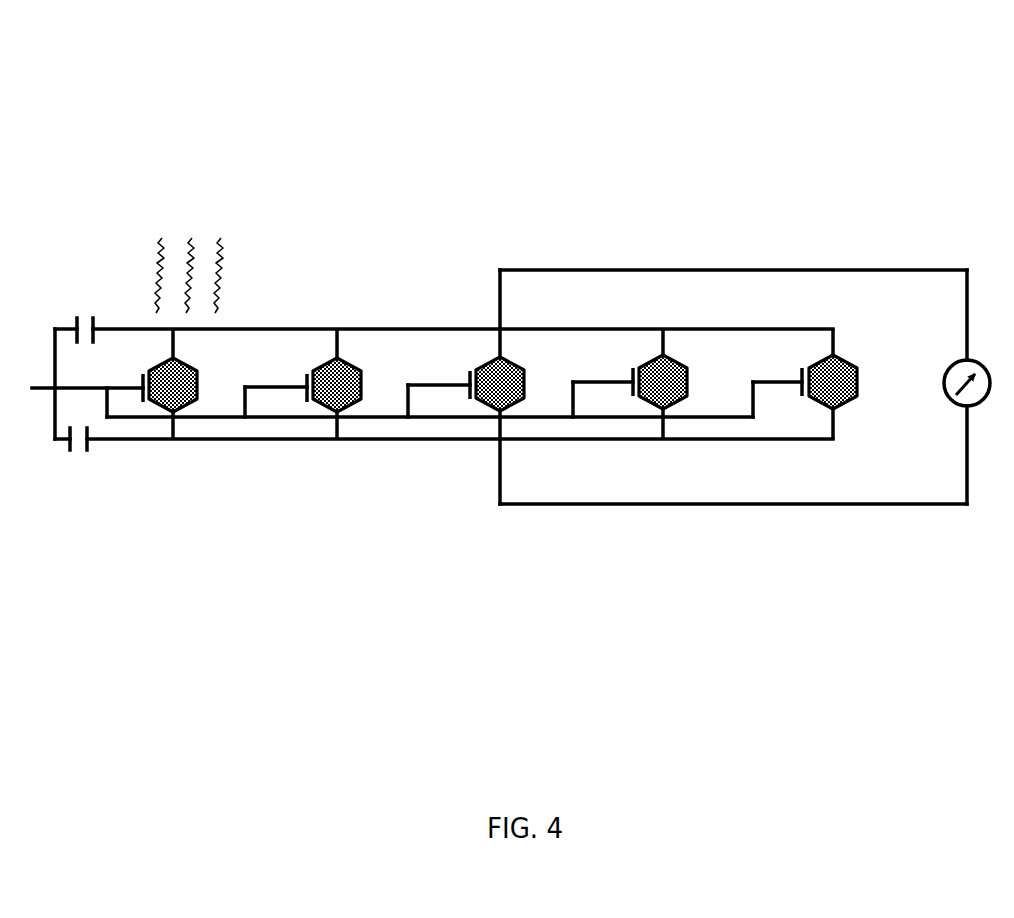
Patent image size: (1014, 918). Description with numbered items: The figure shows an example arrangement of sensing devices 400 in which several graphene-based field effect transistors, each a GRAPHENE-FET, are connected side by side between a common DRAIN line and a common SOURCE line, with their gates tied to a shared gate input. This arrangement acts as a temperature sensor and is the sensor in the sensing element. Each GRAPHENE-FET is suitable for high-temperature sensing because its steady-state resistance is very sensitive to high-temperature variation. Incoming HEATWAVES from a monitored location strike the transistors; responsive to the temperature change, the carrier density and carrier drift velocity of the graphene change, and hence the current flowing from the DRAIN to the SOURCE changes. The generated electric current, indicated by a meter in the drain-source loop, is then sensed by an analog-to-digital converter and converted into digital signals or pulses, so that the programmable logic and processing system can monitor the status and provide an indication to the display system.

The arrangement of sensing devices 400 is at (500, 32).
The drain DRAIN is at (732, 286).
The source SOURCE is at (726, 488).
The graphene-based field effect transistor GRAPHENE-FET is at (326, 405).
The heat waves HEATWAVES is at (219, 282).